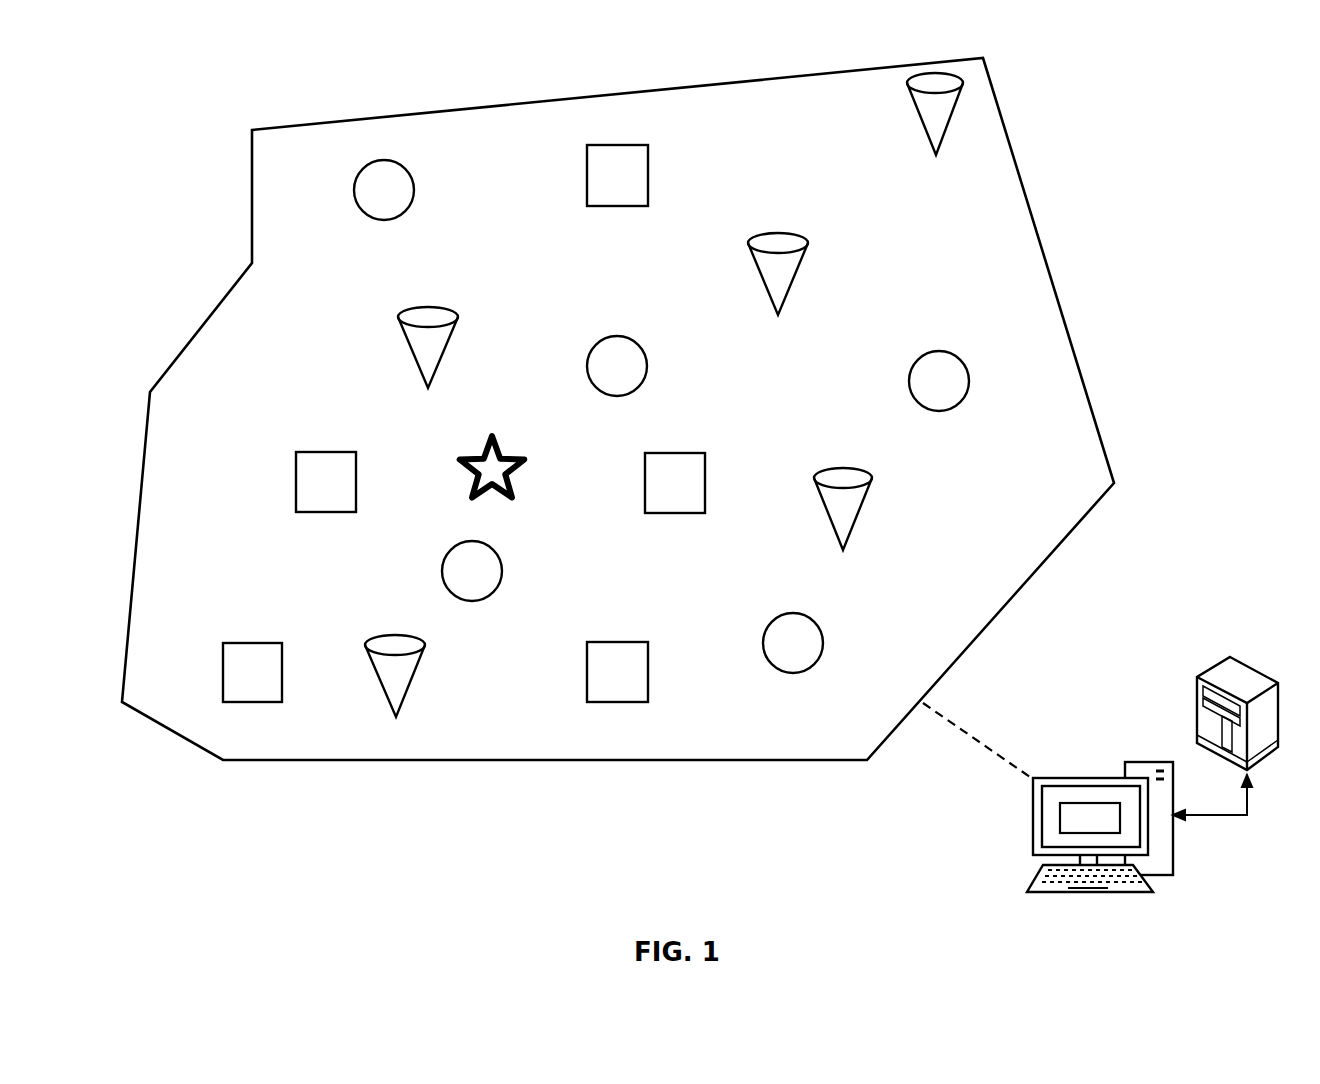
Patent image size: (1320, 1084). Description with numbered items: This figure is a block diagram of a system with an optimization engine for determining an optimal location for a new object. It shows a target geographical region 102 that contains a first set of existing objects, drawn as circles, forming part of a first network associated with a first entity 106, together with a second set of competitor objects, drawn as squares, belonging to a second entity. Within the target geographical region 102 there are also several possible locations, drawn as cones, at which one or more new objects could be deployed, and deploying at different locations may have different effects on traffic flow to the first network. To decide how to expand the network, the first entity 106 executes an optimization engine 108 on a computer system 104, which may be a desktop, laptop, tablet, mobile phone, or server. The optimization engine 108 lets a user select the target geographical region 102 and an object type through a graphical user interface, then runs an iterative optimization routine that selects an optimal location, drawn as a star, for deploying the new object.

The target geographical region 102 is at (324, 123).
The computer system 104 is at (1080, 778).
The first entity 106 is at (1227, 657).
The optimization engine 108 is at (1090, 818).